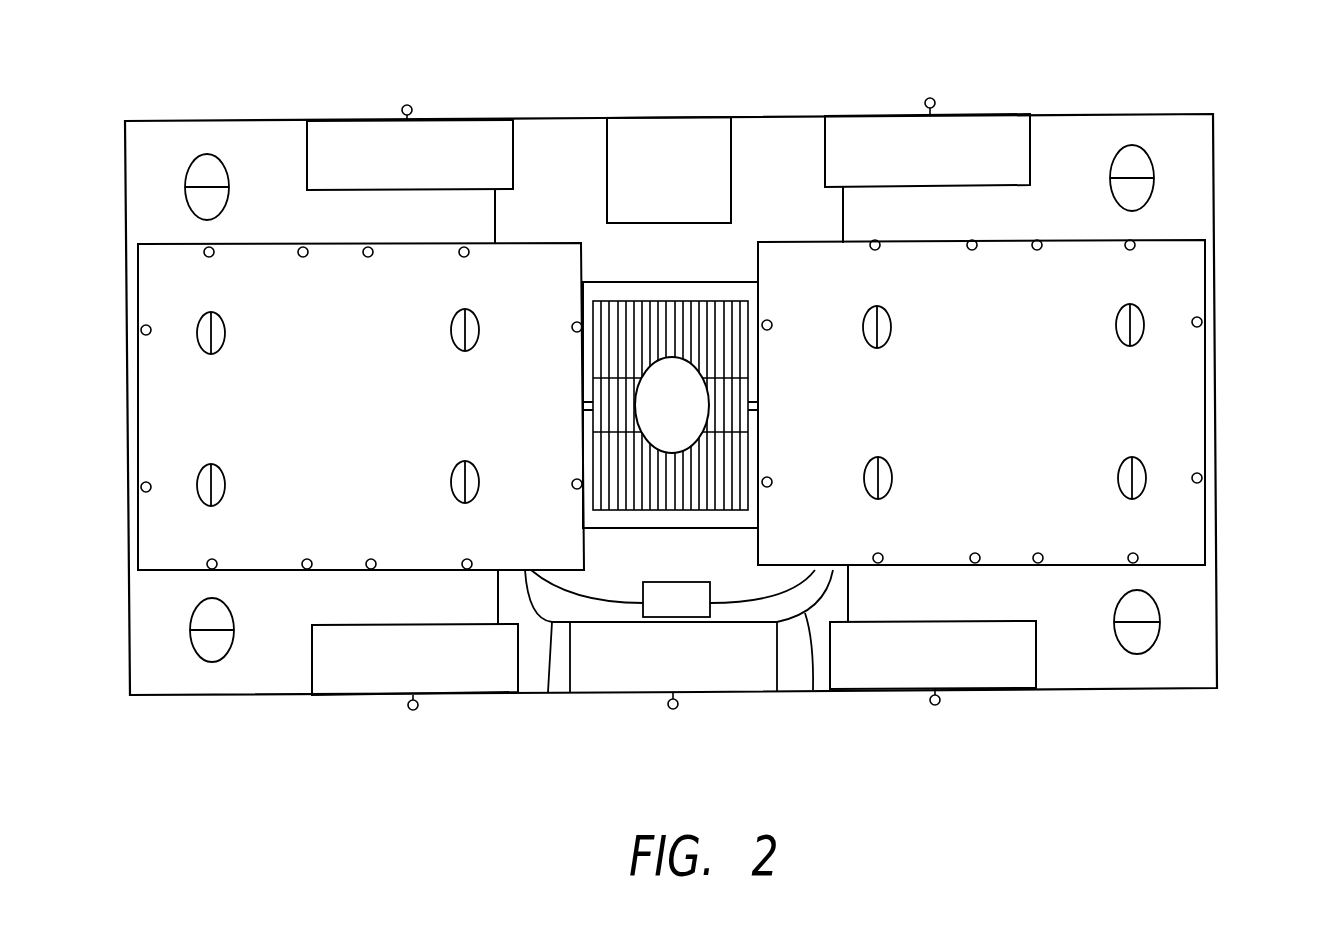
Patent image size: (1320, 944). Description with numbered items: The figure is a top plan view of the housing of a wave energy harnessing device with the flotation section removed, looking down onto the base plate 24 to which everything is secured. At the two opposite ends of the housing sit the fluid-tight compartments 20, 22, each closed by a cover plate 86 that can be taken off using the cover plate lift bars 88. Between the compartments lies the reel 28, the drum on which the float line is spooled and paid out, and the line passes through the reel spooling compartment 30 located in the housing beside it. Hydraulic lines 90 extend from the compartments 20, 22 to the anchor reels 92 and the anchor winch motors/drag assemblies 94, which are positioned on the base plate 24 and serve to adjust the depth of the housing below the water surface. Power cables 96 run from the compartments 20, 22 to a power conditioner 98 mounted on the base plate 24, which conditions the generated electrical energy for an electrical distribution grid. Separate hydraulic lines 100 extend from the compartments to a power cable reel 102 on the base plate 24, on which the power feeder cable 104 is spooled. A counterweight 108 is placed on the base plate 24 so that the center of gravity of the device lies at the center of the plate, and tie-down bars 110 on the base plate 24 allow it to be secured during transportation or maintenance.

The fluid-tight compartment 20 is at (570, 243).
The fluid-tight compartment 22 is at (1005, 240).
The base plate 24 is at (1220, 600).
The reel 28 is at (630, 300).
The reel spooling compartment 30 is at (720, 282).
The cover plate 86 is at (183, 422).
The cover plate lift bar 88 is at (450, 485).
The hydraulic line 90 is at (842, 213).
The anchor reel 92 is at (437, 121).
The anchor winch motor/drag assembly 94 is at (355, 143).
The power cable 96 is at (601, 603).
The power conditioner 98 is at (665, 603).
The hydraulic line 100 is at (550, 692).
The power cable reel 102 is at (727, 677).
The power feeder cable 104 is at (693, 693).
The counterweight 108 is at (675, 145).
The tie-down bar 110 is at (207, 187).